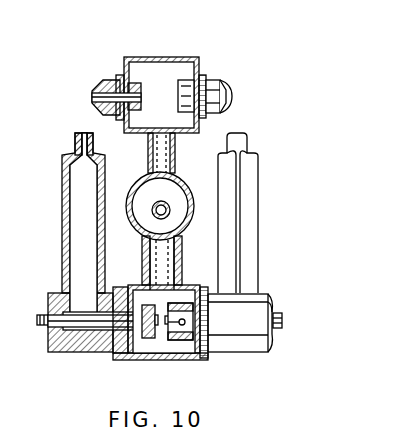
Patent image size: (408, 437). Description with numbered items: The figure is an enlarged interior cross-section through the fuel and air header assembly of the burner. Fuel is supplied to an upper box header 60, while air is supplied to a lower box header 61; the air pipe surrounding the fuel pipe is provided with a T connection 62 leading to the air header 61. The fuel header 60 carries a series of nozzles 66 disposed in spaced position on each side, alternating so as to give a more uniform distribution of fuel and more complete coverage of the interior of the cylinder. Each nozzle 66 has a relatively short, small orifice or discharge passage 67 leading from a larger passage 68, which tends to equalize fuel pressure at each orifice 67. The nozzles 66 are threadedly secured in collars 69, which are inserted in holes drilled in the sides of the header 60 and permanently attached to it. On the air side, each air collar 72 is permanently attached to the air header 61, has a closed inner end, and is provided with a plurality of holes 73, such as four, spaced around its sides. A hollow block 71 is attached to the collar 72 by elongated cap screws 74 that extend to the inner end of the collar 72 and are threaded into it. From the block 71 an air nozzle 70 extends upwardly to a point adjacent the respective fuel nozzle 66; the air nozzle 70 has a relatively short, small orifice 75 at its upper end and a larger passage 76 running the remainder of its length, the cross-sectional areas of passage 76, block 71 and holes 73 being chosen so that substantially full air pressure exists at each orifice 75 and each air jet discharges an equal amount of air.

The upper box header 60 is at (176, 57).
The nozzle 66 is at (116, 78).
The orifice 67 is at (96, 100).
The larger passage 68 is at (137, 96).
The collar 69 is at (203, 78).
The orifice 75 is at (80, 133).
The air nozzle 70 is at (62, 208).
The larger passage 76 is at (75, 258).
The air collar 72 is at (121, 287).
The T connection 62 is at (180, 276).
The hollow block 71 is at (256, 308).
The holes 73 is at (140, 303).
The cap screw 74 is at (283, 320).
The lower box header 61 is at (172, 360).